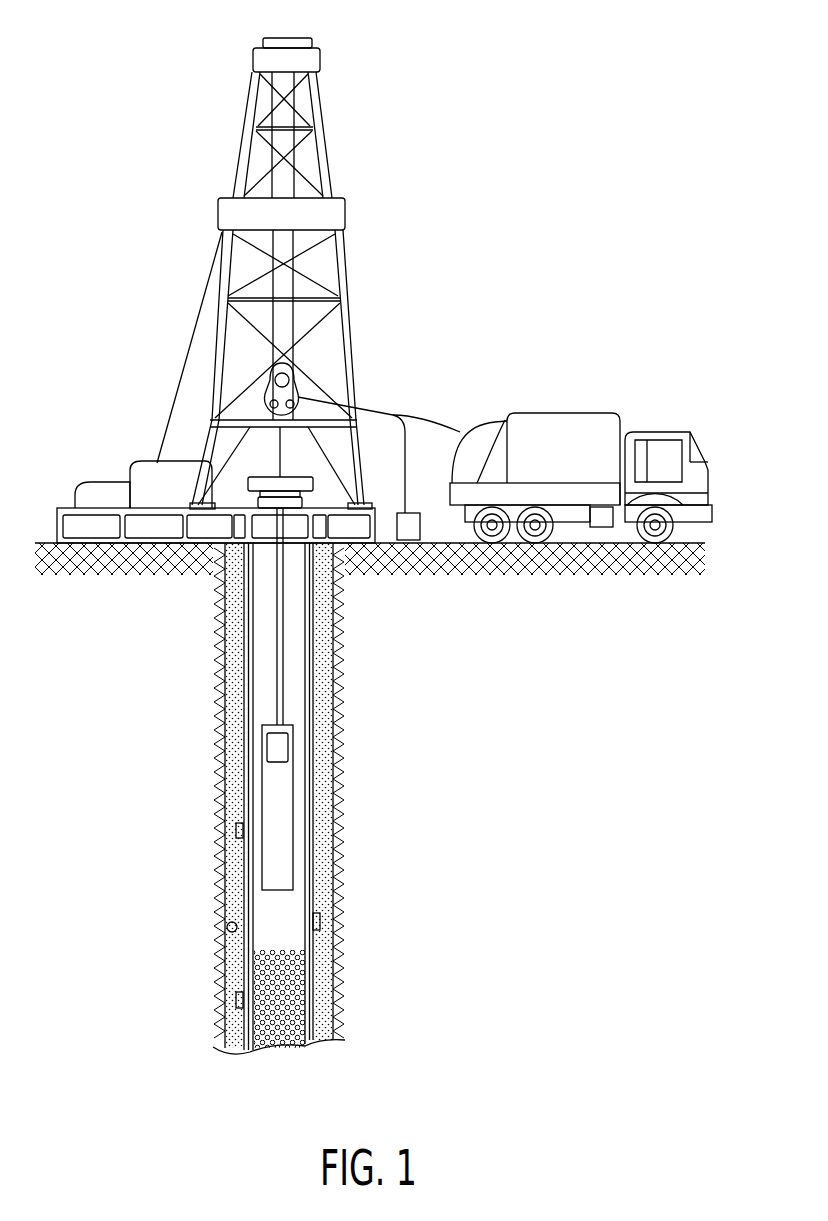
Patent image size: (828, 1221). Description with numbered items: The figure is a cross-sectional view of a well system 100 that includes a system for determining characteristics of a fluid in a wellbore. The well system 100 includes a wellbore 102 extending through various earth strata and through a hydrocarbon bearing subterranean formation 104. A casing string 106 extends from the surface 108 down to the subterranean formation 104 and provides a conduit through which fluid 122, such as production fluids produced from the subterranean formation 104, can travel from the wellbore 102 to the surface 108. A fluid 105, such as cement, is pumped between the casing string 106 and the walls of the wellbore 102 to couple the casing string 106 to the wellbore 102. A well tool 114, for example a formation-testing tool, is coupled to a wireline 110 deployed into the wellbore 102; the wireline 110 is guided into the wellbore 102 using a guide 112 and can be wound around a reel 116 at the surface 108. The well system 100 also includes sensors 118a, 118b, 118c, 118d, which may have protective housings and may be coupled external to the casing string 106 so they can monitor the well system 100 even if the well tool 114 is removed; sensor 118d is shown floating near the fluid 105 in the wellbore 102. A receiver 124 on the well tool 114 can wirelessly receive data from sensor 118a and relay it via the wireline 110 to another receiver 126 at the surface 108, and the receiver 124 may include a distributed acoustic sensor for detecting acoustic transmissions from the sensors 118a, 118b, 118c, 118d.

The well system 100 is at (557, 167).
The wellbore 102 is at (335, 752).
The subterranean formation 104 is at (356, 678).
The fluid 105 is at (232, 770).
The casing string 106 is at (240, 641).
The surface 108 is at (310, 479).
The wireline 110 is at (393, 415).
The guide 112 is at (292, 378).
The well tool 114 is at (295, 822).
The reel 116 is at (487, 424).
The sensor 118a is at (237, 1000).
The sensor 118b is at (318, 920).
The sensor 118c is at (237, 832).
The sensor 118d is at (228, 925).
The fluid 122 is at (287, 998).
The receiver 124 is at (283, 743).
The receiver 126 is at (408, 540).